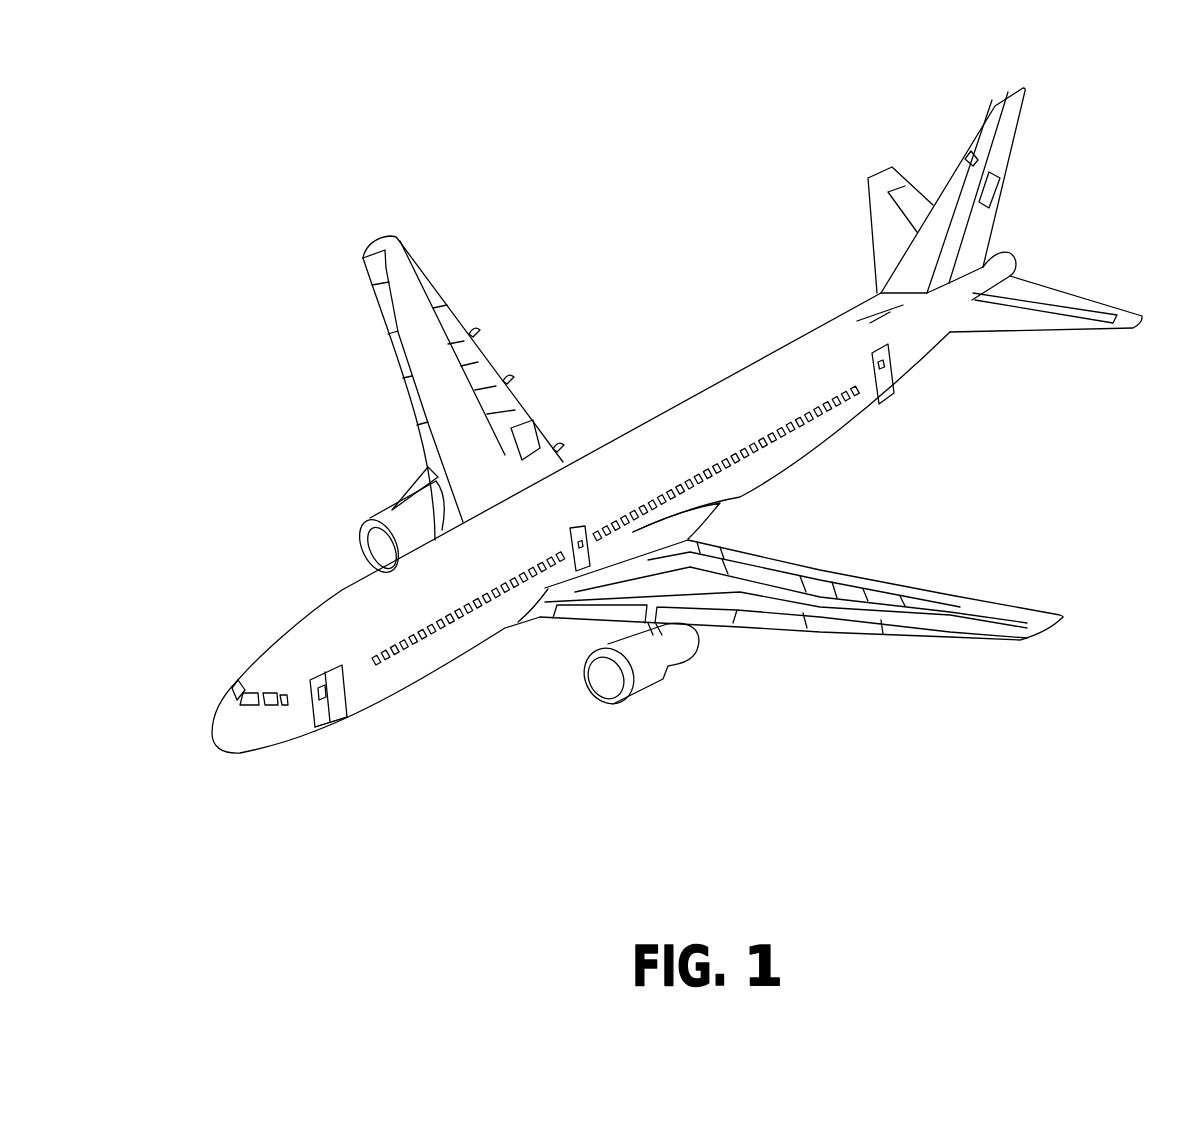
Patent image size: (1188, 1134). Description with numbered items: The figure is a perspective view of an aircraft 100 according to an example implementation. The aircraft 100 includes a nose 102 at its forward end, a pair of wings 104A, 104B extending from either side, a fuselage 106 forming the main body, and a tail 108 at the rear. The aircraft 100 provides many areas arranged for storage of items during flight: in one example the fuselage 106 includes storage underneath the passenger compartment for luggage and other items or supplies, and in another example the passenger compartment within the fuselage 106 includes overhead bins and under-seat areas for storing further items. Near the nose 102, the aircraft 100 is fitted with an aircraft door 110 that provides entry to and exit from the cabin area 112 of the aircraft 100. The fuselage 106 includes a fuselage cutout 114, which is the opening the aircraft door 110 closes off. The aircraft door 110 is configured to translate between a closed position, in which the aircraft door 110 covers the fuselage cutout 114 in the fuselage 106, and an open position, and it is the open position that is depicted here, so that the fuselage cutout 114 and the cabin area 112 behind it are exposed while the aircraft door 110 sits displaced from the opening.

The aircraft 100 is at (615, 345).
The nose 102 is at (231, 762).
The wing 104A is at (409, 230).
The wing 104B is at (1075, 613).
The fuselage 106 is at (766, 465).
The tail 108 is at (1043, 91).
The aircraft door 110 is at (315, 732).
The cabin area 112 is at (350, 695).
The fuselage cutout 114 is at (340, 714).